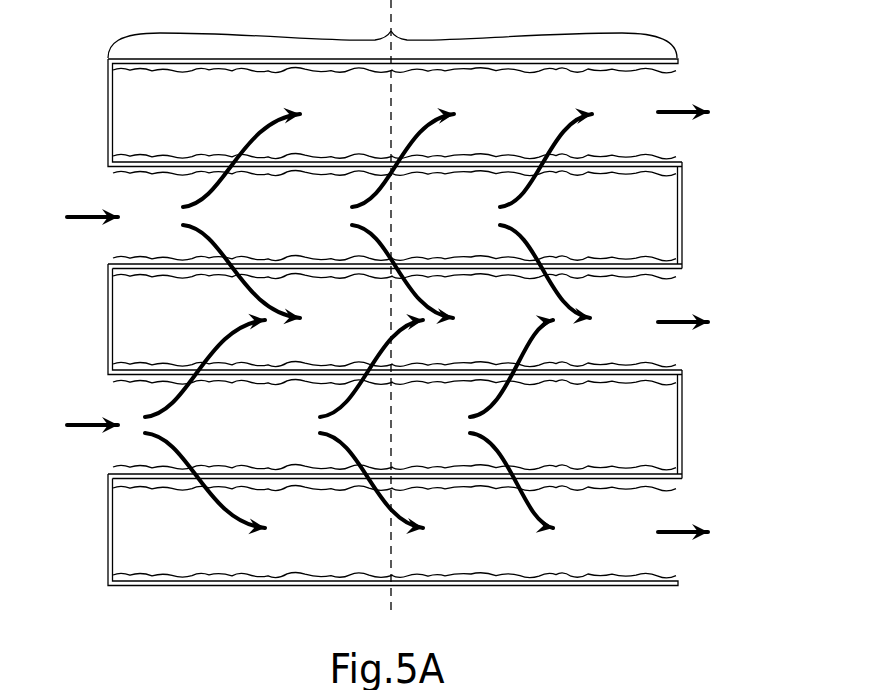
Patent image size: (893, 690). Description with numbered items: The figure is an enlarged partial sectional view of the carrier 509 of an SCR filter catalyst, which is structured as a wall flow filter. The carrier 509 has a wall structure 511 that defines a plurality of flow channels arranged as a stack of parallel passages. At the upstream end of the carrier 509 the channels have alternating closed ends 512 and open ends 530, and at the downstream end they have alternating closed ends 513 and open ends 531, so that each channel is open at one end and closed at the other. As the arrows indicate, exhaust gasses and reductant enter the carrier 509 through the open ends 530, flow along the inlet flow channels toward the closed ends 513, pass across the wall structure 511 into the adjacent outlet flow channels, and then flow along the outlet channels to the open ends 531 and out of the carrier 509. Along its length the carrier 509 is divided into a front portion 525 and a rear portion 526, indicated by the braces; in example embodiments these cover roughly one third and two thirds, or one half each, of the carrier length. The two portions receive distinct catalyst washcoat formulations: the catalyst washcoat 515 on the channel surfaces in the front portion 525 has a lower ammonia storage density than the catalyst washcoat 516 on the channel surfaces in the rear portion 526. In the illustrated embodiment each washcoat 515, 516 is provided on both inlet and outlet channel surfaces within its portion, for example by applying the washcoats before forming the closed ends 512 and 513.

The carrier 509 is at (705, 53).
The wall structure 511 is at (108, 57).
The closed ends 512 is at (108, 108).
The closed ends 513 is at (682, 212).
The catalyst washcoat 515 is at (253, 322).
The catalyst washcoat 516 is at (533, 323).
The front portion 525 is at (249, 30).
The rear portion 526 is at (534, 30).
The open ends 530 is at (108, 186).
The open ends 531 is at (686, 146).